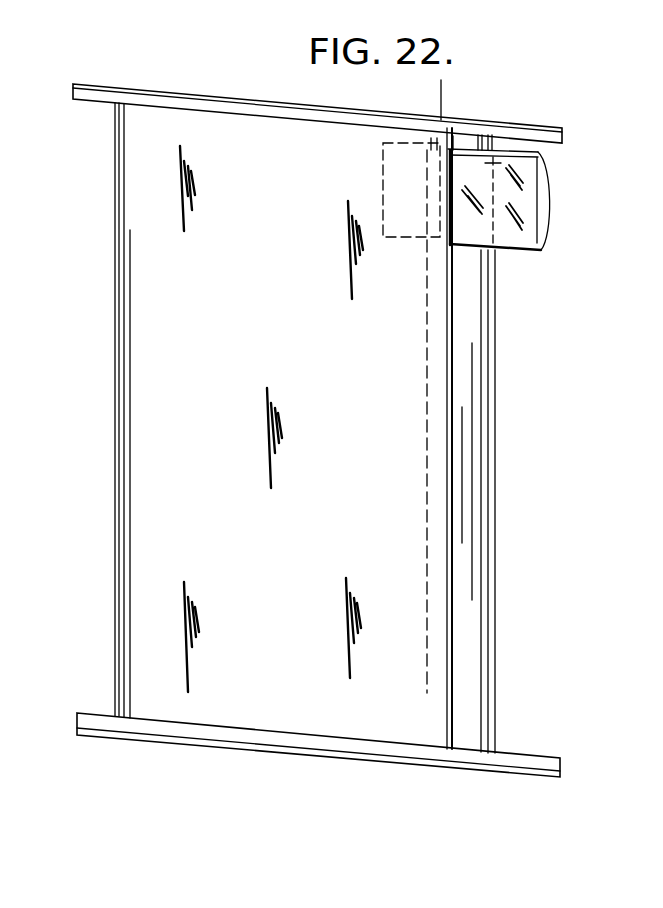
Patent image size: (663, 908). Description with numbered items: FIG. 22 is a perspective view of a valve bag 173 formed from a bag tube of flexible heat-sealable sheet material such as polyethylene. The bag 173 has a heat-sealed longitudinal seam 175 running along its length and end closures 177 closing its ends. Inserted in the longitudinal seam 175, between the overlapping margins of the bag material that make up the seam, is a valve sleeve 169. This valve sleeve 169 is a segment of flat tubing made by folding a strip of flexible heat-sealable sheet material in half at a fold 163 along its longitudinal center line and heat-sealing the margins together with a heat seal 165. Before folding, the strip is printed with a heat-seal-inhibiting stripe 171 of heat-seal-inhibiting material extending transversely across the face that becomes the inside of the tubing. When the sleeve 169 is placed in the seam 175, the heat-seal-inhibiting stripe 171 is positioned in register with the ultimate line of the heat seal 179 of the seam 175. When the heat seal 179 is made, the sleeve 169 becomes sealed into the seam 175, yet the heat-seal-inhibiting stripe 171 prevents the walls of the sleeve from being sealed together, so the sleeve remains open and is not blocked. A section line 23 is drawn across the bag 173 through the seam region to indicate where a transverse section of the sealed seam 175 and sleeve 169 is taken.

The end closures 177 is at (207, 93).
The bag 173 is at (308, 360).
The heat-seal-inhibiting stripe 171 is at (432, 192).
The longitudinal seam 175 is at (448, 534).
The heat seal 179 is at (447, 572).
The fold 163 is at (541, 152).
The valve sleeve 169 is at (549, 190).
The heat seal 165 is at (527, 247).
The section line 23 is at (419, 92).